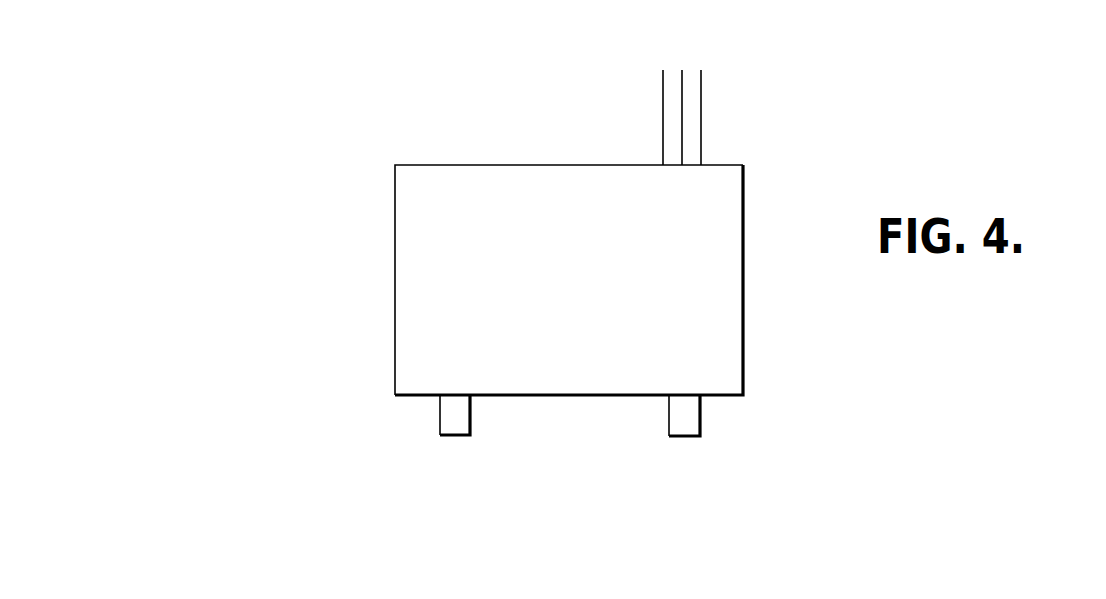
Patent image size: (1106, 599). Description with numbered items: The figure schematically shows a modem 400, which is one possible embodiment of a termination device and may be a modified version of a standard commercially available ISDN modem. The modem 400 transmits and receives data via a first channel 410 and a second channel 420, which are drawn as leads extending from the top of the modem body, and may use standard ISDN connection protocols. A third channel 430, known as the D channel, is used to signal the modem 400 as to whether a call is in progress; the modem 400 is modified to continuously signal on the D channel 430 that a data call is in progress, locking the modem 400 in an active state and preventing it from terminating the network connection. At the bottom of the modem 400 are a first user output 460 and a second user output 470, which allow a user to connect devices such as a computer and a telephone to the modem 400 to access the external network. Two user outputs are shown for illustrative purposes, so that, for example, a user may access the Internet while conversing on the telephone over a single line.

The modem 400 is at (752, 240).
The first channel 410 is at (703, 145).
The second channel 420 is at (683, 85).
The third channel 430 is at (662, 127).
The first user output 460 is at (682, 437).
The second user output 470 is at (453, 437).